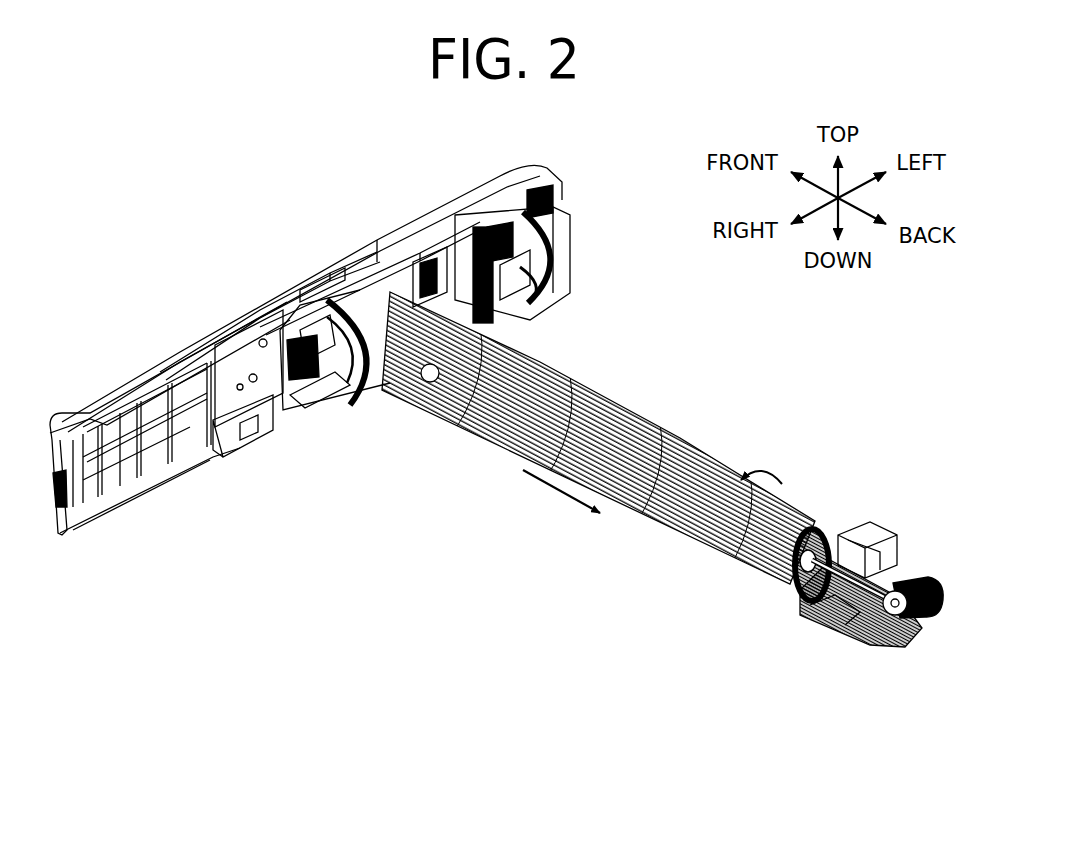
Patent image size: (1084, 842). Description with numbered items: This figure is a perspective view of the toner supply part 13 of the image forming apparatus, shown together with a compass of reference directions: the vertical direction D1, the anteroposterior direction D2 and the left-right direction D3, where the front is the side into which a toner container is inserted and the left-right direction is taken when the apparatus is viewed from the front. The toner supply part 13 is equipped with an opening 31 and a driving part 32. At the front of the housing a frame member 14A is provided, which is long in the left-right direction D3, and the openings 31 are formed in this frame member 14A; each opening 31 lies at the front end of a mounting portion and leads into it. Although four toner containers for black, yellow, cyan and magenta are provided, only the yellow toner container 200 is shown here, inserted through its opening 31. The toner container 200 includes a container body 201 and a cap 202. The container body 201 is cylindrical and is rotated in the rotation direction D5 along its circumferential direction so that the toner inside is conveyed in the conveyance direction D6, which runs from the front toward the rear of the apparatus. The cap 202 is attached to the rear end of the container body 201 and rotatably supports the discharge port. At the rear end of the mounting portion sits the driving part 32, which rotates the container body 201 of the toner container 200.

The toner supply part 13 is at (166, 190).
The frame member 14A is at (259, 306).
The opening 31 is at (455, 217).
The toner container 200 is at (634, 384).
The container body 201 is at (690, 440).
The cap 202 is at (862, 530).
The driving part 32 is at (926, 634).
The vertical direction D1 is at (840, 182).
The anteroposterior direction D2 is at (858, 215).
The left-right direction D3 is at (820, 212).
The rotation direction D5 is at (760, 470).
The conveyance direction D6 is at (550, 483).